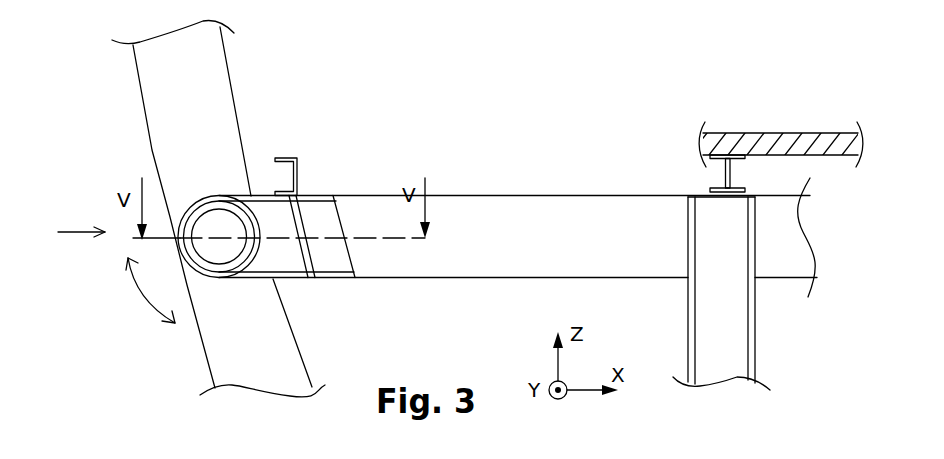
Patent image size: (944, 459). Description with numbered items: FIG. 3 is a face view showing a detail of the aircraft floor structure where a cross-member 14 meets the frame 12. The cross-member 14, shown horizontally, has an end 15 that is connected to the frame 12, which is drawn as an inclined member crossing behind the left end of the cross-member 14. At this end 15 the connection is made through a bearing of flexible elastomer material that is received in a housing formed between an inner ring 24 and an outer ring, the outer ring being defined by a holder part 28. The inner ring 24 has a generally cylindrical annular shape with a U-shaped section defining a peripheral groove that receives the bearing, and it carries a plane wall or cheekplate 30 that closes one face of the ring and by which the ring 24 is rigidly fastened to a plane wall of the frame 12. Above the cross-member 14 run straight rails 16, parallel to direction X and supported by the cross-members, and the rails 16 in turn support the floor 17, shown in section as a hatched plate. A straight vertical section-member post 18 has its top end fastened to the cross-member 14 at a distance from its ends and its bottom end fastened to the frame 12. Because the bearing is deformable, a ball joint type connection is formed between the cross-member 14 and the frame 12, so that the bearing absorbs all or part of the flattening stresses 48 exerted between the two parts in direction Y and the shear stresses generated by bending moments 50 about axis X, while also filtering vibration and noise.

The frame 12 is at (197, 90).
The cross-member 14 is at (489, 261).
The end of the cross-member 15 is at (363, 218).
The rail 16 is at (282, 155).
The floor 17 is at (813, 145).
The post 18 is at (722, 335).
The inner ring 24 is at (218, 278).
The holder part 28 is at (315, 215).
The cheekplate 30 is at (215, 228).
The flattening stresses 48 is at (70, 233).
The bending moments 50 is at (150, 292).